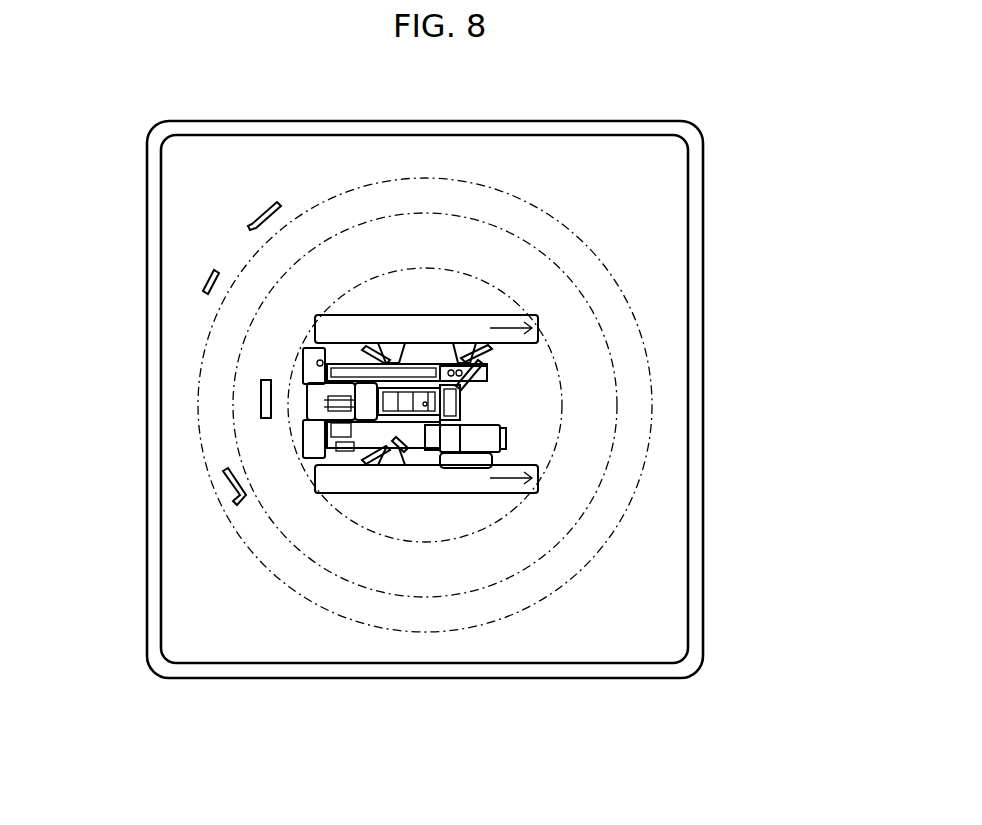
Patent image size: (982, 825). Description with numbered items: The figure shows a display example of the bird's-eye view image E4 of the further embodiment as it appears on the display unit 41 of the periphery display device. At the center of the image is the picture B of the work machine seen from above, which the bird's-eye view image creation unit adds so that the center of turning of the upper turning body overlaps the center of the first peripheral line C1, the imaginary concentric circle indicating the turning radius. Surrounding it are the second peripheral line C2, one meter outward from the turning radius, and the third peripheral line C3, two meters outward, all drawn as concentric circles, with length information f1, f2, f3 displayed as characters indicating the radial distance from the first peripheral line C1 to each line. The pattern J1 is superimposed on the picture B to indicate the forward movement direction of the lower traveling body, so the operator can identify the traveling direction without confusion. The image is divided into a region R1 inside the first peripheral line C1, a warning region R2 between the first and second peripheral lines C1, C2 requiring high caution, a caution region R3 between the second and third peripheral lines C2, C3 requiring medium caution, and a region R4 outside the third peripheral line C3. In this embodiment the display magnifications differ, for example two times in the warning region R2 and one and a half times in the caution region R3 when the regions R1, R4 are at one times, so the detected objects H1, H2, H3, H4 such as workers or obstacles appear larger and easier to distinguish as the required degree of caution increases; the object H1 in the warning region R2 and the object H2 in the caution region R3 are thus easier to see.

The display unit 41 is at (185, 120).
The bird's-eye view image E4 is at (293, 135).
The first peripheral line C1 is at (340, 515).
The second peripheral line C2 is at (467, 590).
The third peripheral line C3 is at (555, 592).
The length information f1 is at (437, 257).
The length information f2 is at (449, 198).
The length information f3 is at (413, 165).
The region R1 is at (392, 528).
The warning region R2 is at (403, 578).
The caution region R3 is at (418, 623).
The region R4 is at (439, 656).
The picture of the work machine B is at (500, 394).
The pattern J1 is at (505, 322).
The object H1 is at (258, 404).
The object H2 is at (235, 497).
The object H3 is at (202, 282).
The object H4 is at (255, 218).